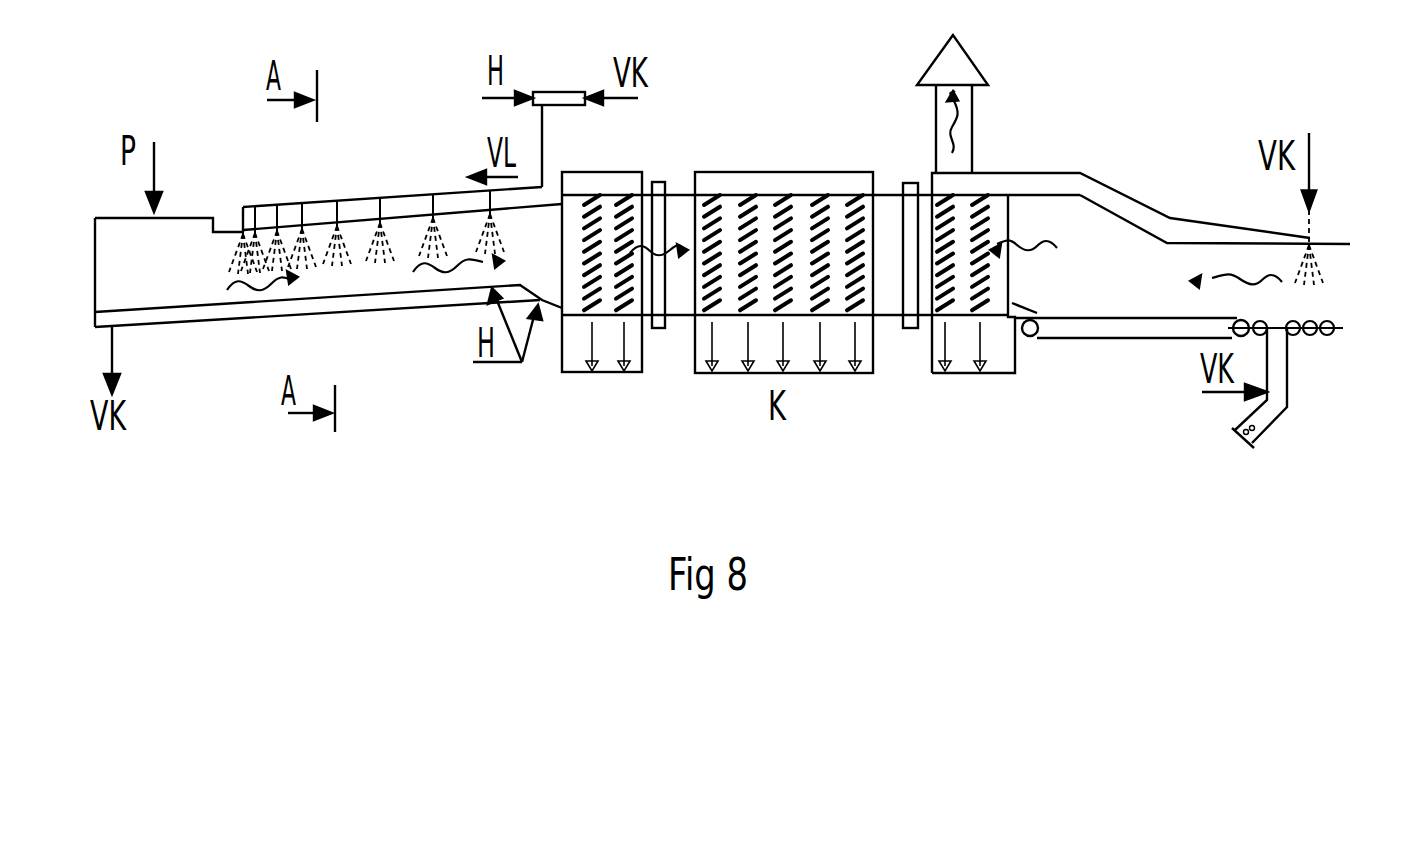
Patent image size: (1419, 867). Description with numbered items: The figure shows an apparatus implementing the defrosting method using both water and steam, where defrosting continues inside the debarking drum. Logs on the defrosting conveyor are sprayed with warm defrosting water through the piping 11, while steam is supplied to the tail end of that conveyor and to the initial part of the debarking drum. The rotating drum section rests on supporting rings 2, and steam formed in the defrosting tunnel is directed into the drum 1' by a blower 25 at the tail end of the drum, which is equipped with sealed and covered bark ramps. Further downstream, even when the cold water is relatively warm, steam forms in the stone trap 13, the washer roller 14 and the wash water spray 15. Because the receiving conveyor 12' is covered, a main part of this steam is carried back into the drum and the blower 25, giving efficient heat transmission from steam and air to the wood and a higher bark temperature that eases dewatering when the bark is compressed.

The piping 11 is at (440, 193).
The supporting rings 2 is at (658, 182).
The drum 1' is at (784, 230).
The blower 25 is at (932, 125).
The wash water spray 15 is at (1311, 237).
The washer roller 14 is at (1333, 320).
The stone trap 13 is at (1284, 373).
The receiving conveyor 12' is at (1132, 394).